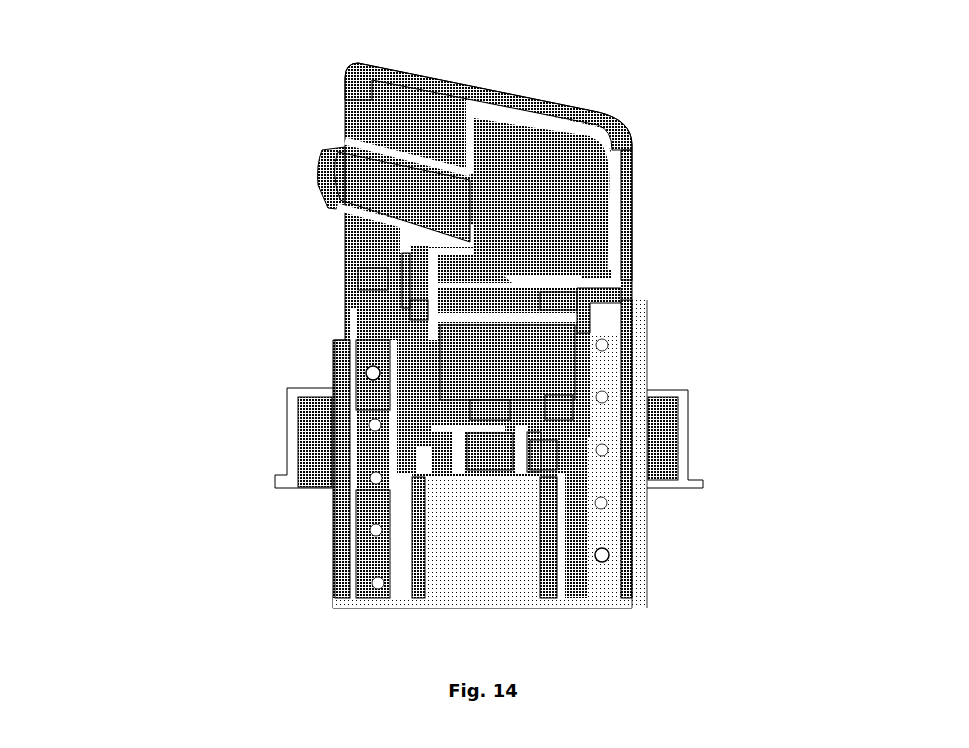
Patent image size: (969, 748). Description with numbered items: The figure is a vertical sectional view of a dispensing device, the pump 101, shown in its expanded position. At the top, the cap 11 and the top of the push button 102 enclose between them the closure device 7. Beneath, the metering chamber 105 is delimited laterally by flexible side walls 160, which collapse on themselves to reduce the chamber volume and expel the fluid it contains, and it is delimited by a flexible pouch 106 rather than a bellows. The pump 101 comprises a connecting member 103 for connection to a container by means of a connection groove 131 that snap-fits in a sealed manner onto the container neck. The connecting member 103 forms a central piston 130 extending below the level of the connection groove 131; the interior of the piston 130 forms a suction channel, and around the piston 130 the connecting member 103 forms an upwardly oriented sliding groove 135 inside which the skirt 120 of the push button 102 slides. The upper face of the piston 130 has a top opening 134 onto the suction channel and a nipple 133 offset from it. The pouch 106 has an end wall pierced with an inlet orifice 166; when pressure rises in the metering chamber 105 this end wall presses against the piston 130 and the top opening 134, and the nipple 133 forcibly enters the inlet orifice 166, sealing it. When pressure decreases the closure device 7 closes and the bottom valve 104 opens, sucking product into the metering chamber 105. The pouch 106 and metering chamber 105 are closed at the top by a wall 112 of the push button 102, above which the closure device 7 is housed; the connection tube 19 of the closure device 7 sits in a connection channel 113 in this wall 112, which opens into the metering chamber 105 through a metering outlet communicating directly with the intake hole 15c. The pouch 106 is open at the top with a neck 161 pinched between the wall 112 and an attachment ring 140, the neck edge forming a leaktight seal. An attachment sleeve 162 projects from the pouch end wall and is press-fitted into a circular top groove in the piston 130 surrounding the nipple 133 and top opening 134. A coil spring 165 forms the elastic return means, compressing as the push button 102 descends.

The pump 101 is at (233, 95).
The cap 11 is at (458, 98).
The closure device 7 is at (563, 153).
The push button 102 is at (637, 207).
The connection tube 19 is at (410, 273).
The connection channel 113 is at (403, 302).
The wall 112 is at (545, 317).
The neck 161 is at (590, 293).
The intake hole 15c is at (422, 325).
The metering chamber 105 is at (548, 347).
The attachment ring 140 is at (390, 338).
The inlet orifice 166 is at (487, 403).
The bottom valve 104 is at (510, 417).
The flexible side walls 160 is at (403, 399).
The connection groove 131 is at (684, 413).
The skirt 120 is at (347, 427).
The flexible pouch 106 is at (570, 412).
The attachment sleeve 162 is at (530, 457).
The connecting member 103 is at (660, 563).
The sliding groove 135 is at (350, 578).
The piston 130 is at (562, 537).
The coil spring 165 is at (373, 585).
The nipple 133 is at (488, 422).
The top opening 134 is at (505, 440).